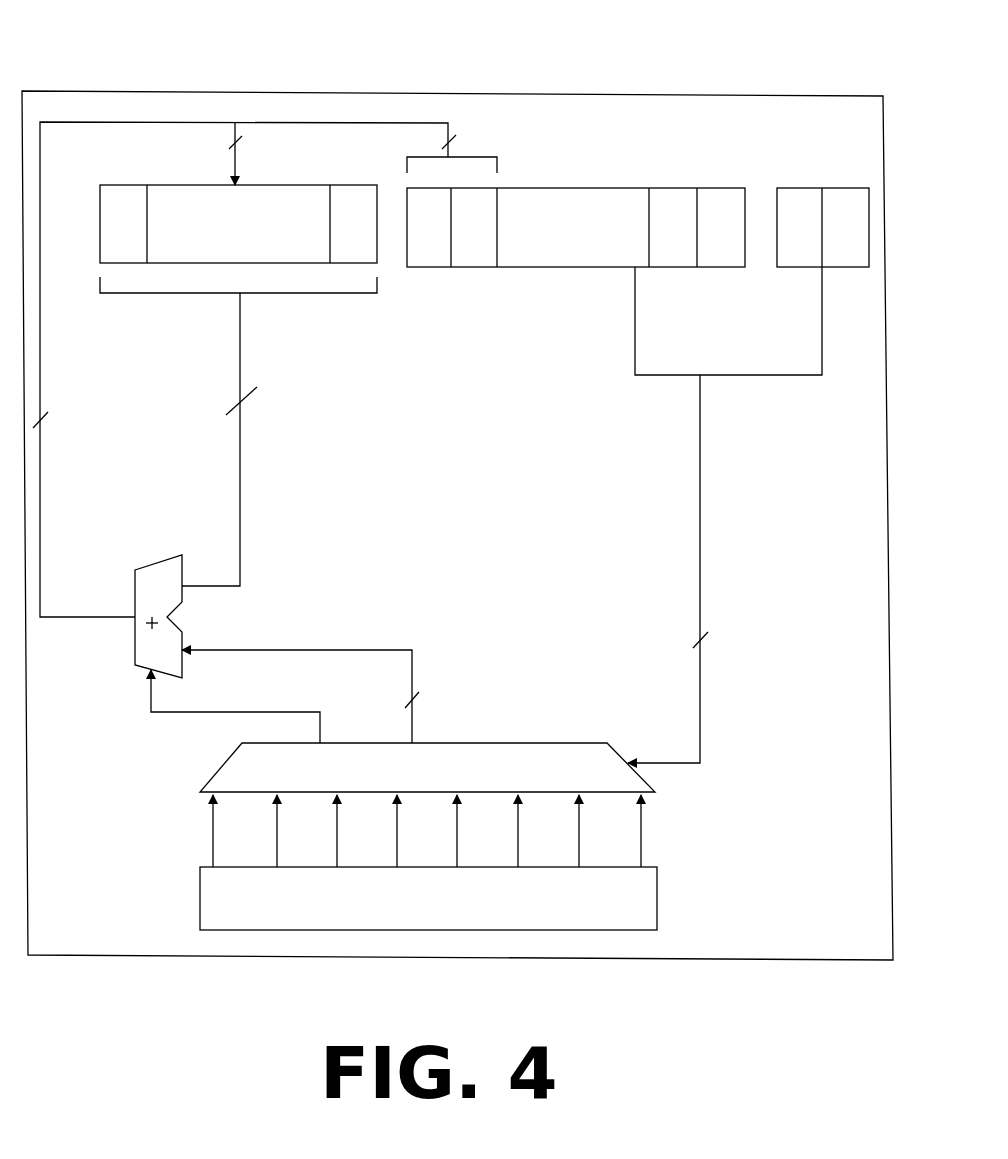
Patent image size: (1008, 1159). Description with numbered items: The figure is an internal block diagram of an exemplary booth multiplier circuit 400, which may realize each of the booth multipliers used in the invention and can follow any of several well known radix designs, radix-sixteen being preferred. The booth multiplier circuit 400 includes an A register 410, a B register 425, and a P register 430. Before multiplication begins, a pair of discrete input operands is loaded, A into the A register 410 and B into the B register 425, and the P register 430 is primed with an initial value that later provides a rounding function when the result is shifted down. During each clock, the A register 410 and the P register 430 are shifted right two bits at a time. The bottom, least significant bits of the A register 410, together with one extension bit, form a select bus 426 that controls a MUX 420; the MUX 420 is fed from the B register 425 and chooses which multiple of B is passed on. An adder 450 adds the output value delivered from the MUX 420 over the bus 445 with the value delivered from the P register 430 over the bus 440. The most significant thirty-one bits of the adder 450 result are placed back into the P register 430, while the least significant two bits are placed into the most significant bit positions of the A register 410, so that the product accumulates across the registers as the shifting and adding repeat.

The booth multiplier circuit 400 is at (217, 29).
The A register 410 is at (584, 188).
The MUX 420 is at (562, 743).
The B register 425 is at (657, 916).
The select bus 426 is at (700, 497).
The P register 430 is at (188, 184).
The bus 440 is at (240, 465).
The bus 445 is at (358, 649).
The adder 450 is at (138, 560).